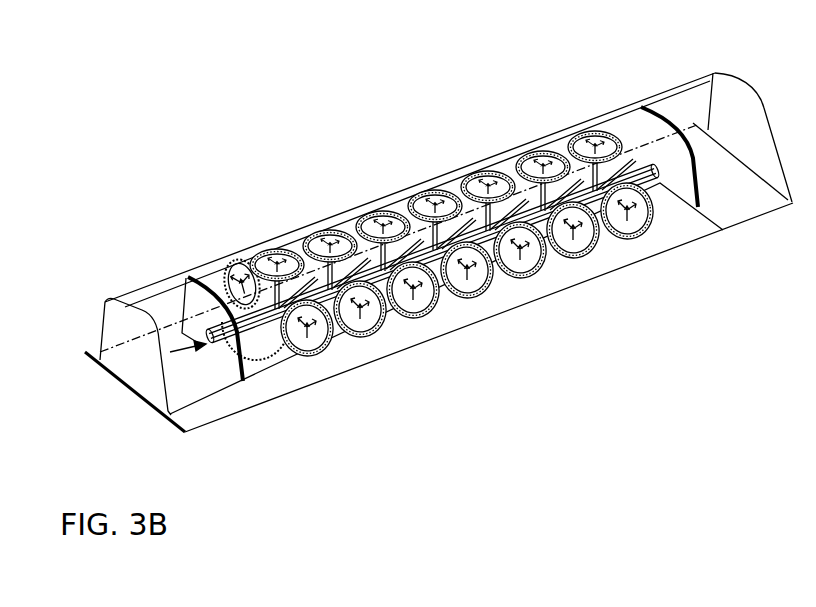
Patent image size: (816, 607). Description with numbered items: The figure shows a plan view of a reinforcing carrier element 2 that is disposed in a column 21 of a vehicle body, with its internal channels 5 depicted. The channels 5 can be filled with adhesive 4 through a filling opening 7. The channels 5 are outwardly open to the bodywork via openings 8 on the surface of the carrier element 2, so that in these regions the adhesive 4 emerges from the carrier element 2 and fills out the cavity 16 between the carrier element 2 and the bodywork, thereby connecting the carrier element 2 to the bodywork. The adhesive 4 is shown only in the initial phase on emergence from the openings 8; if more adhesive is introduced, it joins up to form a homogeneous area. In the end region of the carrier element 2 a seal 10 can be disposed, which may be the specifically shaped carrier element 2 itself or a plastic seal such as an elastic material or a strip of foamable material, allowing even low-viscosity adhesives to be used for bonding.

The carrier element 2 is at (208, 283).
The adhesive 4 is at (327, 233).
The channels 5 is at (517, 163).
The filling opening 7 is at (212, 345).
The openings 8 is at (252, 250).
The seal 10 is at (232, 308).
The cavity 16 is at (610, 113).
The column 21 is at (728, 230).